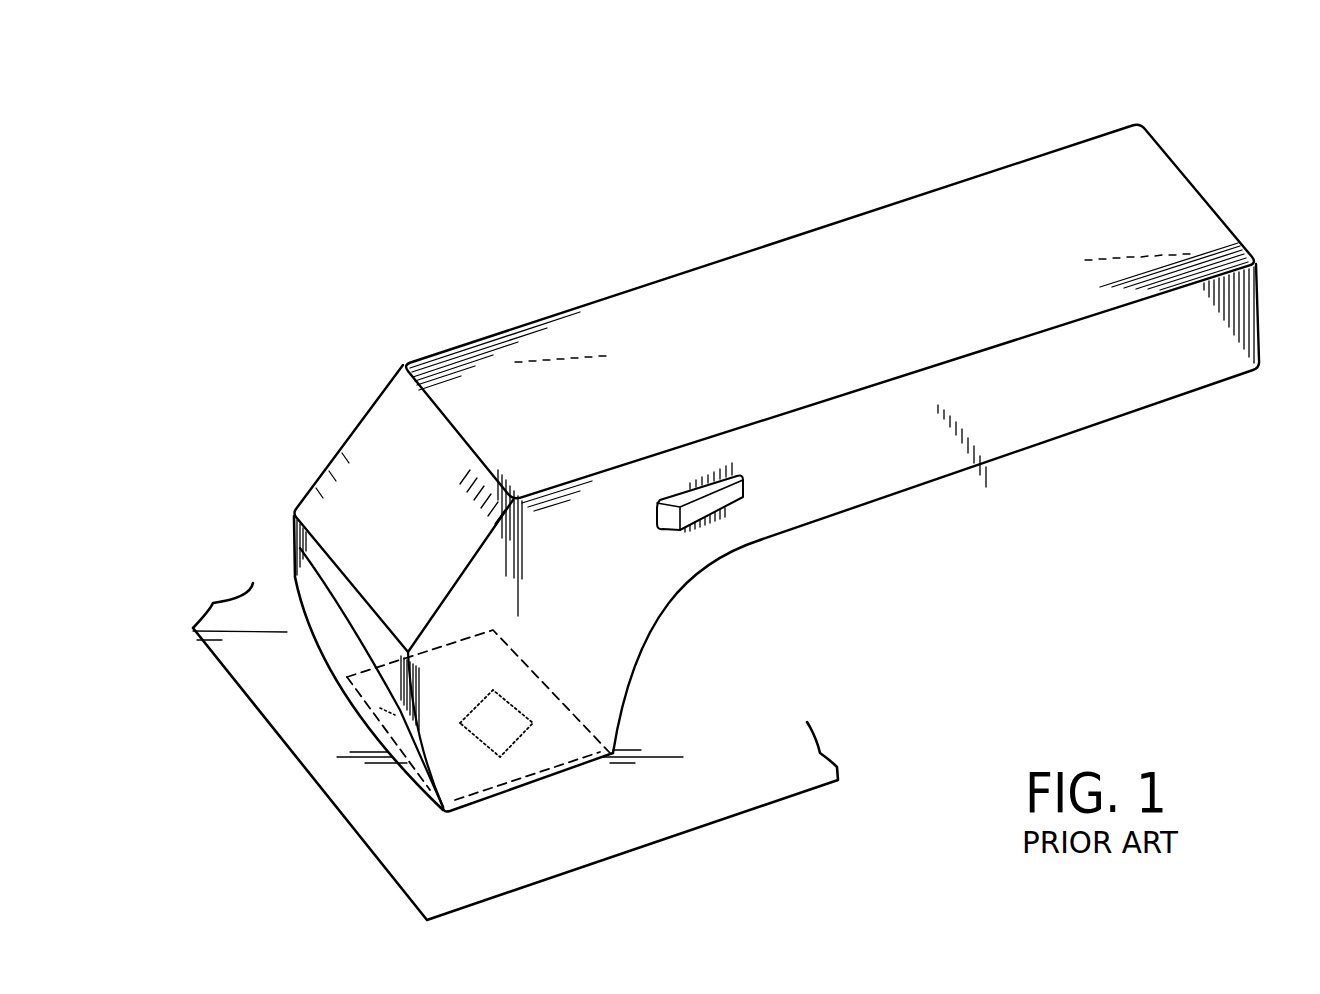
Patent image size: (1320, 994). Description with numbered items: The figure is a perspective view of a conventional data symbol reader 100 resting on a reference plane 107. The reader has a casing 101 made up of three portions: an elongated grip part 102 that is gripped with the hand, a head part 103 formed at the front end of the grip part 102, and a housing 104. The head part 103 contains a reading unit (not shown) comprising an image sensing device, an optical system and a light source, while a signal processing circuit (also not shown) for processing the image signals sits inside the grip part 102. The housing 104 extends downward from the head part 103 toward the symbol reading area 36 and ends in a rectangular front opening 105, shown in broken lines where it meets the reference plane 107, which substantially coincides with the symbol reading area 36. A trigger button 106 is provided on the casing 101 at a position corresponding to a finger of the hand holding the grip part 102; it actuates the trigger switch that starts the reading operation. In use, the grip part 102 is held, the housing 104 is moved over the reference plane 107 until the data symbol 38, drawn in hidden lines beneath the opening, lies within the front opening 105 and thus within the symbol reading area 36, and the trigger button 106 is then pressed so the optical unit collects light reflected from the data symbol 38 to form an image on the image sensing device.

The data symbol reader 100 is at (628, 240).
The casing 101 is at (826, 268).
The grip part 102 is at (1077, 187).
The head part 103 is at (363, 458).
The housing 104 is at (603, 638).
The front opening 105 is at (480, 767).
The trigger button 106 is at (693, 511).
The reference plane 107 is at (713, 803).
The symbol reading area 36 is at (387, 713).
The data symbol 38 is at (527, 740).